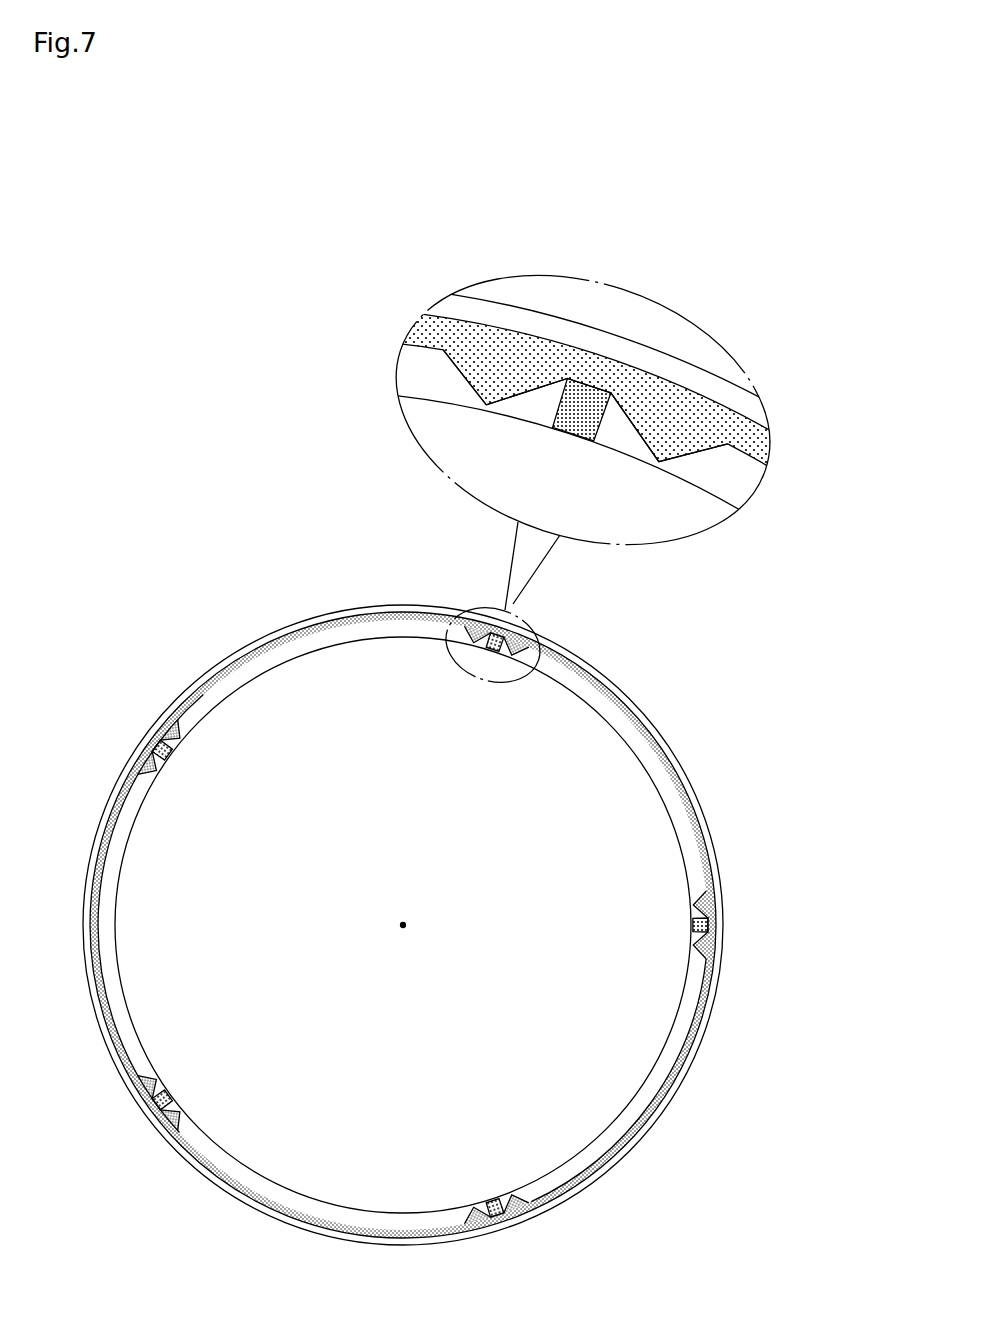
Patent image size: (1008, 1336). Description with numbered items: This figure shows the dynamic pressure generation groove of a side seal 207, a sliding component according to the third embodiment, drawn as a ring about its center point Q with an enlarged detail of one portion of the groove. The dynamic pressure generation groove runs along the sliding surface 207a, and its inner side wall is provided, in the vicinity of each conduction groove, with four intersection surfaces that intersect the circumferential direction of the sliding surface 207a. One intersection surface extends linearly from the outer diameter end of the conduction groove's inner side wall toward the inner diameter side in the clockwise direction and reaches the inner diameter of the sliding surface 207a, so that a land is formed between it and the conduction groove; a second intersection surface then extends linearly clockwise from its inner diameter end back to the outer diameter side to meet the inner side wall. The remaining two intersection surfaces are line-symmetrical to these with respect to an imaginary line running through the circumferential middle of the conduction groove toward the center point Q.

The side seal 207 is at (182, 688).
The sliding surface 207a is at (318, 652).
The center point Q is at (403, 921).